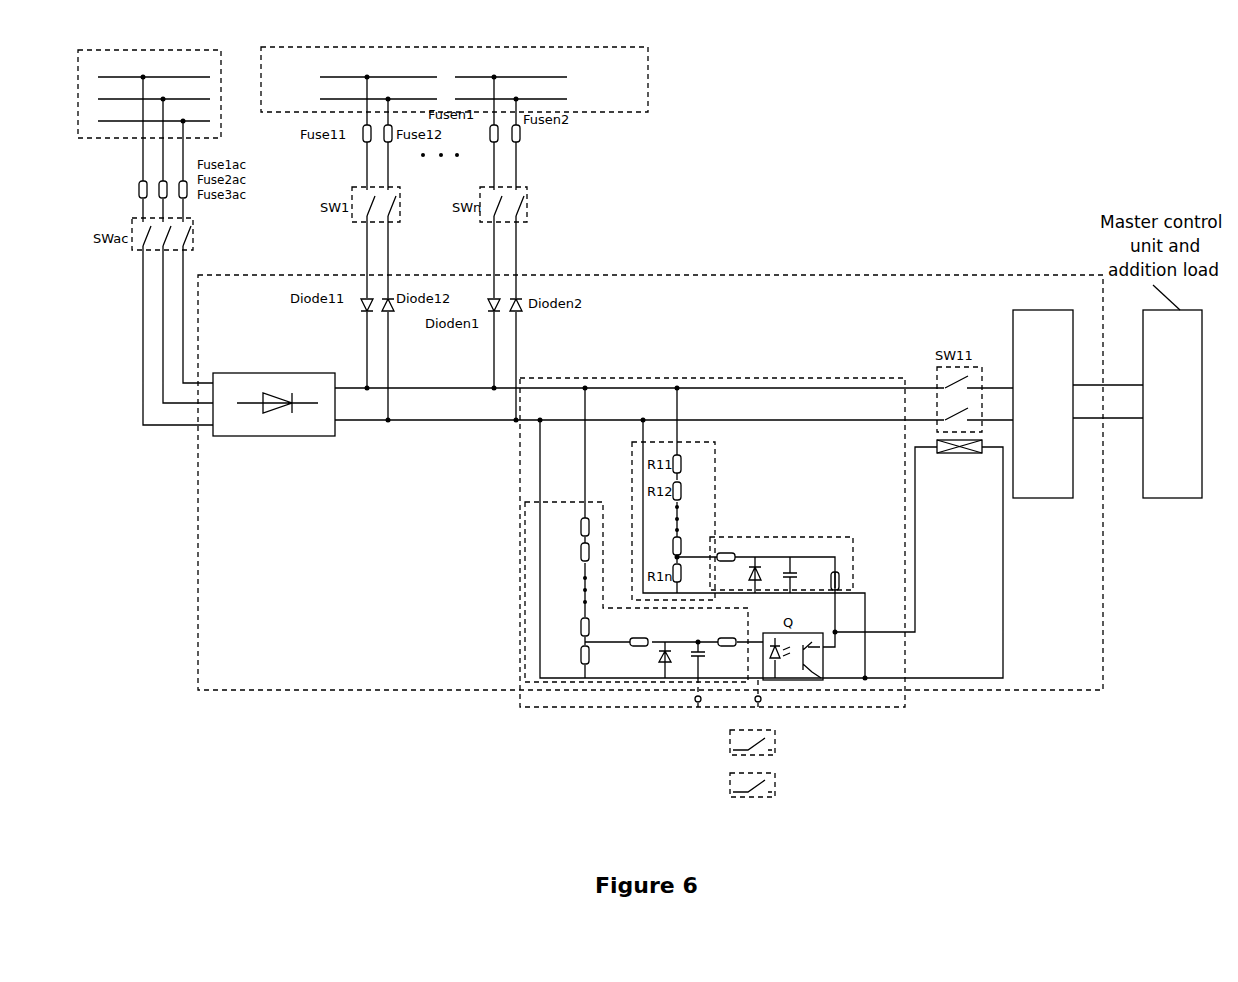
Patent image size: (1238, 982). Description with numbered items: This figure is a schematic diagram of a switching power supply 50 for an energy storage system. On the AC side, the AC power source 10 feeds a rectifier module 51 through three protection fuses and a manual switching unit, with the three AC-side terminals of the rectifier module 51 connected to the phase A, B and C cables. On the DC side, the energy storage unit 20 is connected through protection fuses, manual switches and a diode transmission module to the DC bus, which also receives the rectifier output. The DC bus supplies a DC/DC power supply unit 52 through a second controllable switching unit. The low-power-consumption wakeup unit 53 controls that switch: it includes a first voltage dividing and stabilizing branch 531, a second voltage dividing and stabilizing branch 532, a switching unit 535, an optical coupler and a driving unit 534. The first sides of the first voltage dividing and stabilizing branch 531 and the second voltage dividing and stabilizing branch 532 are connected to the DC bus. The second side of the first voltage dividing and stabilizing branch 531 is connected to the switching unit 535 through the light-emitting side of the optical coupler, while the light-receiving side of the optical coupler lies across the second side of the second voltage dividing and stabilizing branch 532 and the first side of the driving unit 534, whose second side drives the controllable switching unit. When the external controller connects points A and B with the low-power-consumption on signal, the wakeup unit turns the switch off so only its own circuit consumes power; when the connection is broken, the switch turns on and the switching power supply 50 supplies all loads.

The AC power source 10 is at (123, 52).
The energy storage unit 20 is at (365, 47).
The switching power supply 50 is at (575, 275).
The rectifier module 51 is at (287, 437).
The DC/DC power supply unit 52 is at (1013, 350).
The low-power-consumption wakeup unit 53 is at (580, 377).
The first voltage dividing and stabilizing branch 531 is at (540, 500).
The second voltage dividing and stabilizing branch 532 is at (740, 537).
The driving unit 534 is at (970, 457).
The switching unit 535 is at (777, 713).